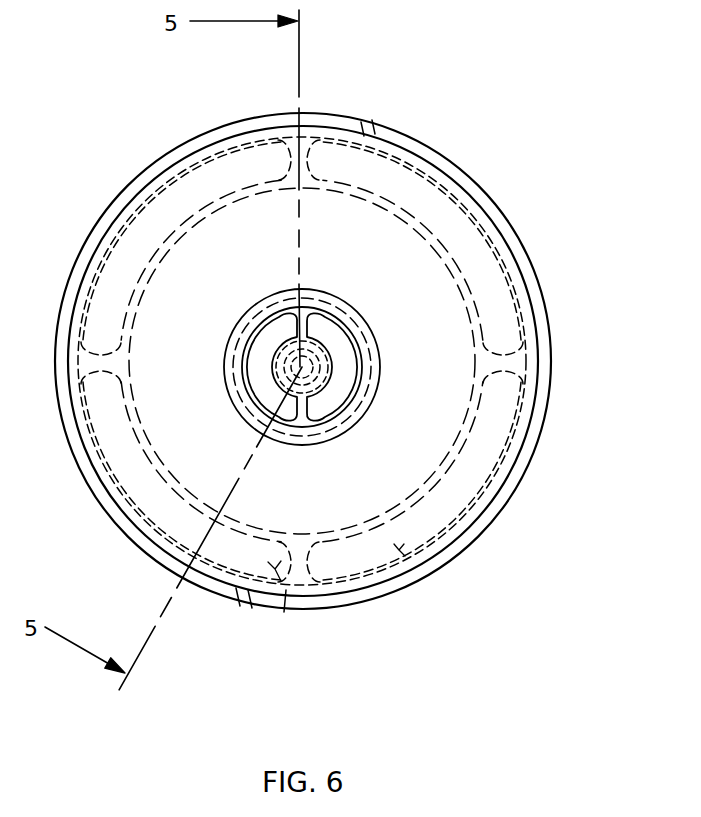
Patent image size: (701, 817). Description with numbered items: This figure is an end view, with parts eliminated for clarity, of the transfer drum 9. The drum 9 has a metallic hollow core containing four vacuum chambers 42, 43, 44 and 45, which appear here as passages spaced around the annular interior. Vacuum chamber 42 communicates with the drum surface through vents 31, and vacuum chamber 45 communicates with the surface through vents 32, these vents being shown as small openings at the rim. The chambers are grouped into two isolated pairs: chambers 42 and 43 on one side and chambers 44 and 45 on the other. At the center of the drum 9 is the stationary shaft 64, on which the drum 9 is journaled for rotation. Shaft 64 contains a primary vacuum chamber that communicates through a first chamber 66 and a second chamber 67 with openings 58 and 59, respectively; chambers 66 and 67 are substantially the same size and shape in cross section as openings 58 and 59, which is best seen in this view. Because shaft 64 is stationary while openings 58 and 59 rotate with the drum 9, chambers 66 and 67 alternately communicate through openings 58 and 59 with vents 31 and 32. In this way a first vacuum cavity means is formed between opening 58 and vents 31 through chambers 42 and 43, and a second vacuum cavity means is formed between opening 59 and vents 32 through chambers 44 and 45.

The transfer drum 9 is at (485, 559).
The vents 31 is at (234, 610).
The vents 32 is at (368, 123).
The vacuum chamber 42 is at (284, 612).
The vacuum chamber 43 is at (178, 194).
The vacuum chamber 44 is at (413, 568).
The vacuum chamber 45 is at (456, 206).
The opening 58 is at (256, 380).
The opening 59 is at (349, 350).
The stationary shaft 64 is at (333, 433).
The first chamber 66 is at (265, 337).
The second chamber 67 is at (350, 382).